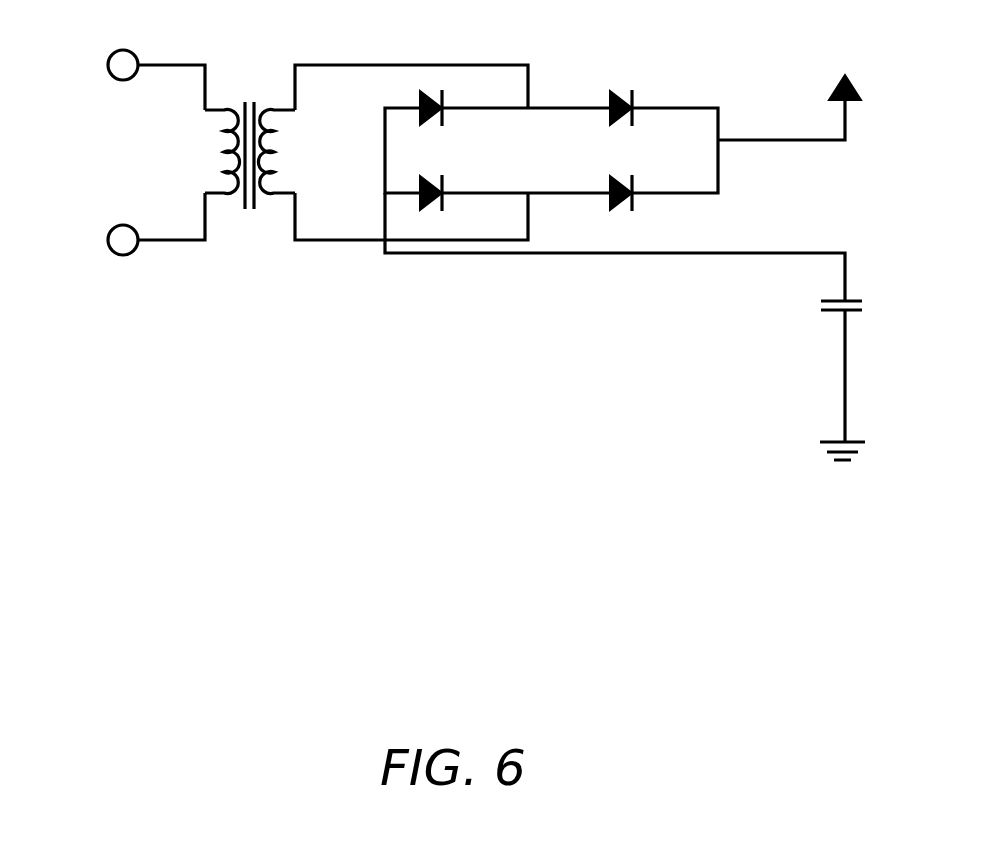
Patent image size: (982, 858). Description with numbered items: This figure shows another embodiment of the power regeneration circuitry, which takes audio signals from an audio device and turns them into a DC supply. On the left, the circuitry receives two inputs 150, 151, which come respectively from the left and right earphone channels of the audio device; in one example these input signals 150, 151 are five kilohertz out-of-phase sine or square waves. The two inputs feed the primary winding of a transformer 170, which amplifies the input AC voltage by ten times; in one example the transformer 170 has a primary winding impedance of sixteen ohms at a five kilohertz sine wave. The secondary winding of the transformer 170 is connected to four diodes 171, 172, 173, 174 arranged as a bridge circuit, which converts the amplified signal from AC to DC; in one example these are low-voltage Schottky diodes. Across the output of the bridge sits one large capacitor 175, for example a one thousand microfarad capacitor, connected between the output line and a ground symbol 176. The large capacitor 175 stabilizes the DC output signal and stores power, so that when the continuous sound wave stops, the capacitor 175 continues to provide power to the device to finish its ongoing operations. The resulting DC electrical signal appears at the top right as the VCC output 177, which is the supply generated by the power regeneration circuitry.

The input 150 is at (130, 70).
The input 151 is at (130, 235).
The transformer 170 is at (253, 88).
The diode 171 is at (417, 105).
The diode 172 is at (430, 182).
The diode 173 is at (608, 93).
The diode 174 is at (615, 177).
The large capacitor 175 is at (808, 313).
The ground 176 is at (830, 442).
The DC electrical signal (VCC output) 177 is at (840, 72).